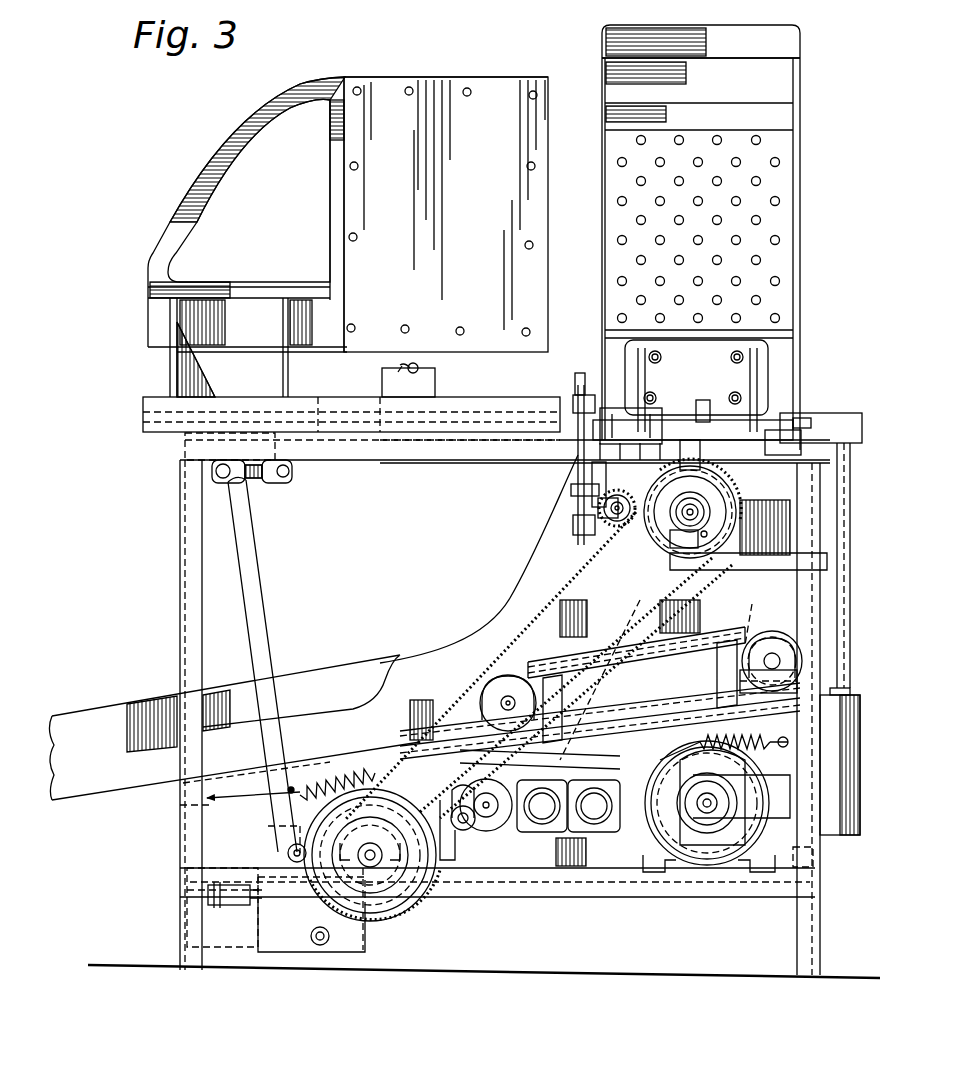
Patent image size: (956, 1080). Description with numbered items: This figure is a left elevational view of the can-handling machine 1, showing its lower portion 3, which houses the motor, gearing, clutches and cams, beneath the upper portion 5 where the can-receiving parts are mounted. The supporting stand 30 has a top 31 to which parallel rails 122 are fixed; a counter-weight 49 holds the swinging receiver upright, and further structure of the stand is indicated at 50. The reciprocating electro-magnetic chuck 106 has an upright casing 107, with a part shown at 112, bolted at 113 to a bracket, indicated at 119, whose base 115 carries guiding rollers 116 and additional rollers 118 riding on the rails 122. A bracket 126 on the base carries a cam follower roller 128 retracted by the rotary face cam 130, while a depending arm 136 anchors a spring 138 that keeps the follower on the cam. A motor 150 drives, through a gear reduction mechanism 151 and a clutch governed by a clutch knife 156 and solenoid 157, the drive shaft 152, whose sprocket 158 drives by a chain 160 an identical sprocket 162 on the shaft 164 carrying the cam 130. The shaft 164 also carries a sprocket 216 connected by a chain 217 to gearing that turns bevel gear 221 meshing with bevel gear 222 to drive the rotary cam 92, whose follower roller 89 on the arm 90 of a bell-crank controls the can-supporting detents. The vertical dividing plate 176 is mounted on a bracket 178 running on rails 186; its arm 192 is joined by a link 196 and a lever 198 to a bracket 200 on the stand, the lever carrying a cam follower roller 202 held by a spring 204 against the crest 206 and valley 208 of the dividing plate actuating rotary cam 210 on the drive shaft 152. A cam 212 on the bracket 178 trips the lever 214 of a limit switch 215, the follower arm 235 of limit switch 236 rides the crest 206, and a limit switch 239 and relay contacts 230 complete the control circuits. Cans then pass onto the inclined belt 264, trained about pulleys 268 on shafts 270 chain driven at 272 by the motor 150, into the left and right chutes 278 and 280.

The machine 1 is at (195, 140).
The lower portion 3 is at (176, 508).
The upper portion 5 is at (142, 267).
The supporting stand 30 is at (180, 590).
The top 31 is at (600, 430).
The counter-weight 49 is at (838, 835).
The upright post 50 is at (851, 533).
The cam follower roller 89 is at (574, 523).
The arm 90 is at (566, 545).
The rotary cam 92 is at (572, 488).
The reciprocating electro-magnetic chuck 106 is at (805, 137).
The upright casing 107 is at (800, 232).
The hopper top band 112 is at (775, 35).
The bolts 113 is at (730, 357).
The base 115 is at (703, 426).
The guiding rollers 116 is at (628, 402).
The rollers 118 is at (608, 457).
The mounting bracket 119 is at (775, 357).
The rails 122 is at (795, 416).
The bracket 126 is at (693, 448).
The cam follower roller 128 is at (690, 512).
The rotary face cam 130 is at (660, 560).
The depending arm 136 is at (772, 441).
The spring 138 is at (730, 476).
The motor 150 is at (676, 880).
The gear reduction mechanism 151 is at (575, 868).
The shaft 152 is at (372, 870).
The clutch knife 156 is at (312, 928).
The solenoid 157 is at (235, 903).
The sprocket 158 is at (265, 835).
The chain 160 is at (650, 612).
The sprocket 162 is at (630, 530).
The shaft 164 is at (708, 534).
The dividing plate 176 is at (386, 80).
The bracket 178 is at (253, 106).
The rails 186 is at (140, 414).
The arm 192 is at (292, 470).
The link 196 is at (255, 480).
The lever 198 is at (256, 584).
The bracket 200 is at (262, 936).
The cam follower roller 202 is at (288, 852).
The spring 204 is at (544, 760).
The crest 206 is at (300, 820).
The valley 208 is at (370, 930).
The dividing plate actuating rotary cam 210 is at (410, 905).
The cam 212 is at (165, 349).
The lever 214 is at (400, 366).
The limit switch 215 is at (436, 382).
The sprocket 216 is at (712, 512).
The chain 217 is at (633, 427).
The bevel gear 221 is at (612, 498).
The bevel gear 222 is at (490, 666).
The contacts 230 is at (720, 508).
The follower arm 235 is at (450, 880).
The limit switch 236 is at (486, 905).
The limit switch 239 is at (600, 675).
The belt 264 is at (755, 618).
The pulleys 268 is at (480, 700).
The shafts 270 is at (512, 695).
The chain drive 272 is at (575, 712).
The left chute 278 is at (472, 640).
The right chute 280 is at (352, 662).